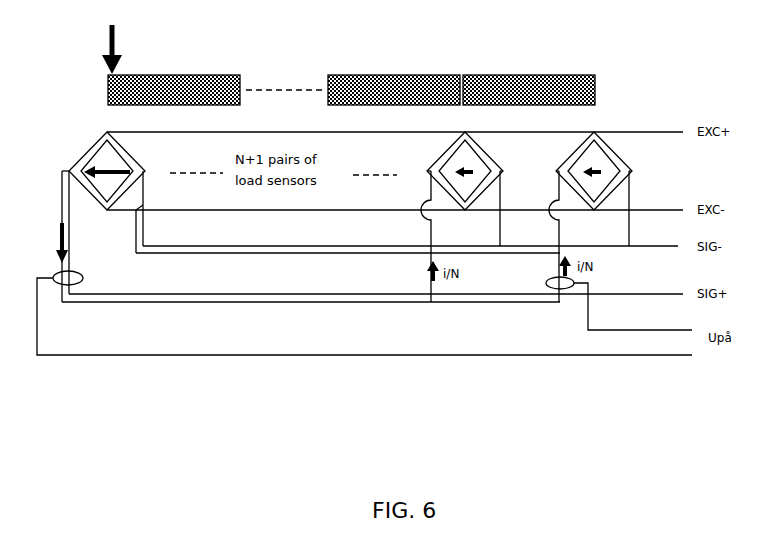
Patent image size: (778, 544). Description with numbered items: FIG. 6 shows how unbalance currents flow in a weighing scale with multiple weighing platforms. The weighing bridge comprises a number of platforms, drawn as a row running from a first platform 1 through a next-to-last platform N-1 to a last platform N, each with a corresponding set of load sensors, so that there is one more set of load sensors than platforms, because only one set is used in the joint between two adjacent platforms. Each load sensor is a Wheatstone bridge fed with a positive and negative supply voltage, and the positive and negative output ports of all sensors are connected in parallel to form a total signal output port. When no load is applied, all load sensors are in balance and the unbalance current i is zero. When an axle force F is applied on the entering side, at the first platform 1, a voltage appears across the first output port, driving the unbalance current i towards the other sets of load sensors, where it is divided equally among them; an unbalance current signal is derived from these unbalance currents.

The first platform 1 is at (174, 75).
The (N-1)th platform N-1 is at (394, 75).
The Nth platform N is at (529, 75).
The axle force F is at (116, 49).
The unbalance current i is at (50, 243).